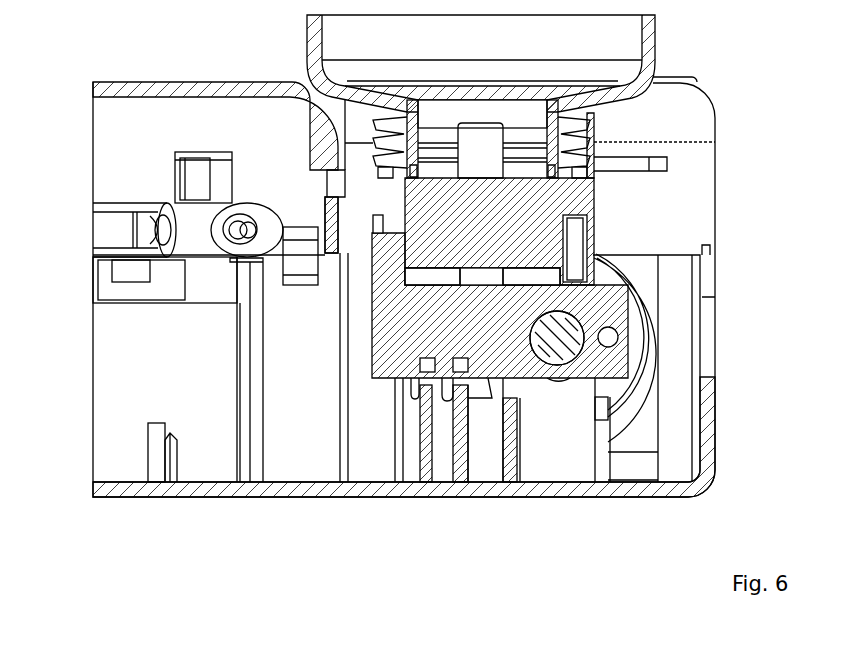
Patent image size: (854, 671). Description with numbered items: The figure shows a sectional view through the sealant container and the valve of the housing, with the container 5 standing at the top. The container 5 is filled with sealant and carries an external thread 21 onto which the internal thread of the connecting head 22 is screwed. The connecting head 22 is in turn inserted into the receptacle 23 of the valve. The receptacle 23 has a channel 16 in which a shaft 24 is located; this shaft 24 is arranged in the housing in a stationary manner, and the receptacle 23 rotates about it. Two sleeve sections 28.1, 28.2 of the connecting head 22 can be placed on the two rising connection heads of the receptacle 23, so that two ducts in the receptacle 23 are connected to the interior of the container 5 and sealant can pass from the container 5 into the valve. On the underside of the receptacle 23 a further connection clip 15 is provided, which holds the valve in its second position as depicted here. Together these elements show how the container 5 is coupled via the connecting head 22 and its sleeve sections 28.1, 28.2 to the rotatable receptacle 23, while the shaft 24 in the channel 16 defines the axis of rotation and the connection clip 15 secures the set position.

The container 5 is at (384, 33).
The connection clip 15 is at (412, 397).
The channel 16 is at (575, 358).
The external thread 21 is at (585, 133).
The connecting head 22 is at (542, 200).
The receptacle 23 is at (598, 312).
The shaft 24 is at (560, 343).
The sleeve section 28.1 is at (432, 278).
The sleeve section 28.2 is at (533, 277).